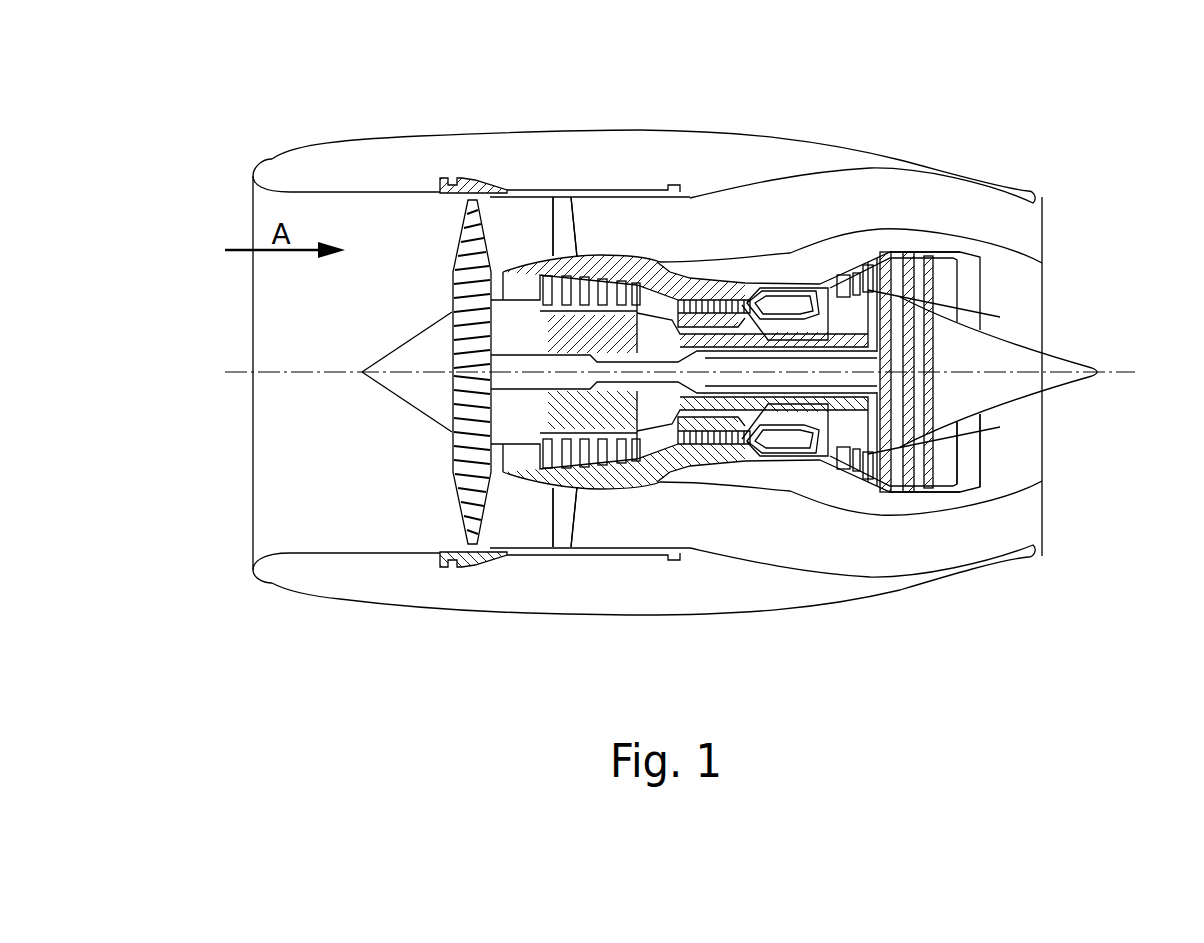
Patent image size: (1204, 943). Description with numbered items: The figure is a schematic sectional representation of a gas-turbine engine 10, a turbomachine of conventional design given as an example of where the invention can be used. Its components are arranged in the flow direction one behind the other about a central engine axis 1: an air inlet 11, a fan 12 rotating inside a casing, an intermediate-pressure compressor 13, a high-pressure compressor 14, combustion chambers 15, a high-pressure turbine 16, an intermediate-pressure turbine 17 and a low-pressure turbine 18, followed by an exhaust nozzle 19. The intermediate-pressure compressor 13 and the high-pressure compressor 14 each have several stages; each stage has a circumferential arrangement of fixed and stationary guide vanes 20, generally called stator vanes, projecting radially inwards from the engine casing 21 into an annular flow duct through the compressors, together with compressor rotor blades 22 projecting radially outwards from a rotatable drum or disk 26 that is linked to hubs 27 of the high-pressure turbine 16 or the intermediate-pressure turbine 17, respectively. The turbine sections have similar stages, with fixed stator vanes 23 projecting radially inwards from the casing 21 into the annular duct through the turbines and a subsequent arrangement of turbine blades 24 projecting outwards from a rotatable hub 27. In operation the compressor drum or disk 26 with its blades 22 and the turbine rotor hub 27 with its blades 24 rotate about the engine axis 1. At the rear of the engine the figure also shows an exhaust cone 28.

The central engine axis 1 is at (287, 373).
The gas-turbine engine 10 is at (822, 186).
The air inlet 11 is at (412, 224).
The fan 12 is at (482, 208).
The intermediate-pressure compressor 13 is at (617, 318).
The high-pressure compressor 14 is at (727, 300).
The combustion chambers 15 is at (805, 300).
The high-pressure turbine 16 is at (821, 290).
The intermediate-pressure turbine 17 is at (863, 262).
The low-pressure turbine 18 is at (953, 250).
The exhaust nozzle 19 is at (968, 302).
The guide vanes 20 is at (550, 457).
The engine casing 21 is at (597, 460).
The compressor rotor blades 22 is at (650, 472).
The stator vanes 23 is at (867, 440).
The turbine blades 24 is at (883, 423).
The compressor drum or disk 26 is at (660, 463).
The turbine rotor hub 27 is at (893, 393).
The exhaust cone 28 is at (1057, 367).